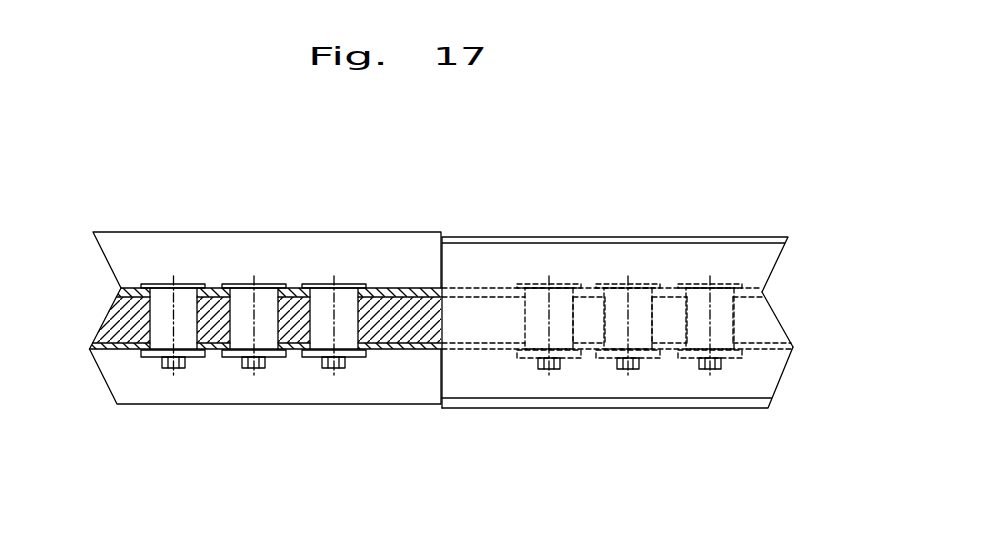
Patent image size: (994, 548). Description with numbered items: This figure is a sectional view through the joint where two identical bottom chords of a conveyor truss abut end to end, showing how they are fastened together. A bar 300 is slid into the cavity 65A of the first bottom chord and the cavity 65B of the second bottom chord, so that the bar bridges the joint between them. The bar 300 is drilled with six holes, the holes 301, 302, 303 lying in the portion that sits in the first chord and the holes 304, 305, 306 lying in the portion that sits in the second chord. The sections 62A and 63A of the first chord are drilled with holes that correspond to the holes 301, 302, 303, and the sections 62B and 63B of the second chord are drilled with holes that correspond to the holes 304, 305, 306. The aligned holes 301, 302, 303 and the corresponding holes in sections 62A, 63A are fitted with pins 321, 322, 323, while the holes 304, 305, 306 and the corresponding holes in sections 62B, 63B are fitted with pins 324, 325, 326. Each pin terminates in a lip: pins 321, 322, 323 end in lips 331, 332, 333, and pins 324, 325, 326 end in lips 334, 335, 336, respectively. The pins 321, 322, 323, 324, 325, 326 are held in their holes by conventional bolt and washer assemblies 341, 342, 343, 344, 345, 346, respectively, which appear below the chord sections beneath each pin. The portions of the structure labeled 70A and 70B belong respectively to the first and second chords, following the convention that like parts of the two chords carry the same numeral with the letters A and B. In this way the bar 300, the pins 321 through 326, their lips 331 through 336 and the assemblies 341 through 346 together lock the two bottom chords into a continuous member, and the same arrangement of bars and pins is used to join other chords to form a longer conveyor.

The first connector housing 70A is at (225, 245).
The second connector housing 70B is at (530, 250).
The bar 300 is at (413, 292).
The hole 301 is at (140, 290).
The hole 302 is at (213, 288).
The hole 303 is at (287, 288).
The hole 304 is at (525, 313).
The hole 305 is at (605, 322).
The hole 306 is at (687, 325).
The pin 321 is at (140, 323).
The pin 322 is at (297, 350).
The pin 323 is at (370, 332).
The pin 324 is at (525, 332).
The pin 325 is at (652, 320).
The pin 326 is at (735, 333).
The lip 331 is at (198, 286).
The lip 332 is at (283, 288).
The lip 333 is at (360, 286).
The lip 334 is at (523, 287).
The lip 335 is at (603, 287).
The lip 336 is at (690, 287).
The bolt and washer assembly 341 is at (163, 367).
The bolt and washer assembly 342 is at (243, 367).
The bolt and washer assembly 343 is at (323, 367).
The bolt and washer assembly 344 is at (537, 367).
The bolt and washer assembly 345 is at (613, 367).
The bolt and washer assembly 346 is at (707, 367).
The section 62A is at (148, 322).
The section 62B is at (757, 291).
The section 63A is at (85, 343).
The section 63B is at (793, 347).
The cavity 65A is at (381, 351).
The cavity 65B is at (502, 340).